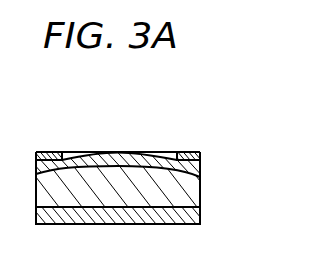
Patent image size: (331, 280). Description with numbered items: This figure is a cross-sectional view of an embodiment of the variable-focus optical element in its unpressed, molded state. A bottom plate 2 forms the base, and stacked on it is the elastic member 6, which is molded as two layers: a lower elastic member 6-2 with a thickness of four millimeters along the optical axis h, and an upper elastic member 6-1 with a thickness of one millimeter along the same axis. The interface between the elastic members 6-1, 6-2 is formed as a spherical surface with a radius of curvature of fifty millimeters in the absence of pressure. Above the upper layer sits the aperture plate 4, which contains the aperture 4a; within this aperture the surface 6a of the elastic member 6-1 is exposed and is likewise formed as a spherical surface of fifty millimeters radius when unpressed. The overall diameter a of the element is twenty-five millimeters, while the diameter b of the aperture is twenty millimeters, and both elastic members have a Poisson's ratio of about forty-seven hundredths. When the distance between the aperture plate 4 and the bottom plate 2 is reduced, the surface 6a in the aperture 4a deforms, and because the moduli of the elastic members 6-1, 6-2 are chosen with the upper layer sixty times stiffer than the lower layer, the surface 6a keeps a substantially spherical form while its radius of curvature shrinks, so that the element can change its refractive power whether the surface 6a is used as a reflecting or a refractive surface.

The bottom plate 2 is at (180, 224).
The aperture plate 4 is at (186, 152).
The aperture 4a is at (64, 155).
The elastic member 6 is at (150, 178).
The elastic member 6-1 is at (200, 165).
The elastic member 6-2 is at (200, 193).
The surface 6a is at (123, 153).
The diameter of the element a is at (200, 87).
The diameter of the aperture b is at (177, 110).
The optical axis h is at (118, 141).